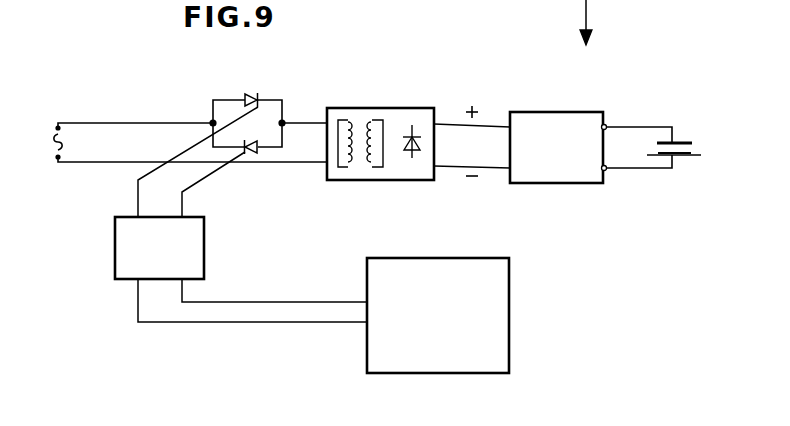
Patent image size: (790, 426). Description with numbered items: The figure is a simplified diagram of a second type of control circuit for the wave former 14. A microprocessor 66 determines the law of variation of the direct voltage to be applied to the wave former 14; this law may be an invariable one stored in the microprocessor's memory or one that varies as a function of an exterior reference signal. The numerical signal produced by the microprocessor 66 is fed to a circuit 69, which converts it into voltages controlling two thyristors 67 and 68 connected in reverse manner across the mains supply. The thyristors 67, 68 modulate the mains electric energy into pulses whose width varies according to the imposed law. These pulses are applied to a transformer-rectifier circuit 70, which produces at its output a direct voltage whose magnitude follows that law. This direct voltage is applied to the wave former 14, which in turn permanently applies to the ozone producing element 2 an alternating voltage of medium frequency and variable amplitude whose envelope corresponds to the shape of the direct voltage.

The ozone producing element 2 is at (684, 158).
The wave former 14 is at (548, 185).
The microprocessor 66 is at (323, 315).
The thyristor 67 is at (255, 93).
The thyristor 68 is at (248, 154).
The circuit 69 is at (159, 248).
The transformer-rectifier circuit 70 is at (388, 108).